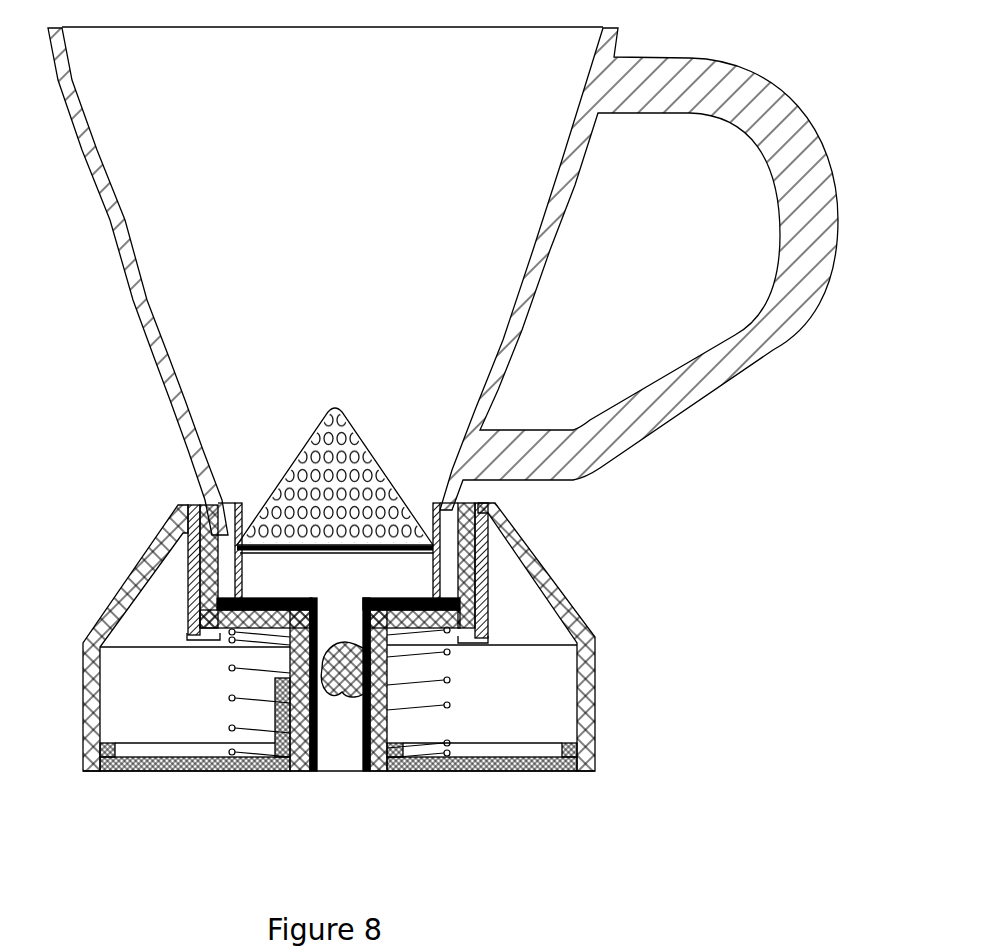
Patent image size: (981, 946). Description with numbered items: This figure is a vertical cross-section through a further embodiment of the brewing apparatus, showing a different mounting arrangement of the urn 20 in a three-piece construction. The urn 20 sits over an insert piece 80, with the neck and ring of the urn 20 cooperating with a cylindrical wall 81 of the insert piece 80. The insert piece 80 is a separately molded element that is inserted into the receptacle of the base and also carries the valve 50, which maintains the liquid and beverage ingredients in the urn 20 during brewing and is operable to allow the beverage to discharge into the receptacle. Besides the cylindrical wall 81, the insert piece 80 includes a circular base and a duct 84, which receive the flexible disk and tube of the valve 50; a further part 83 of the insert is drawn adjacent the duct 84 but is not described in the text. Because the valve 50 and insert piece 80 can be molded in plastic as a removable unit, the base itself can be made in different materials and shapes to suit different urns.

The urn 20 is at (125, 288).
The valve 50 is at (463, 694).
The insert piece 80 is at (473, 588).
The cylindrical wall 81 is at (477, 522).
The valve body 83 is at (418, 625).
The duct 84 is at (310, 771).